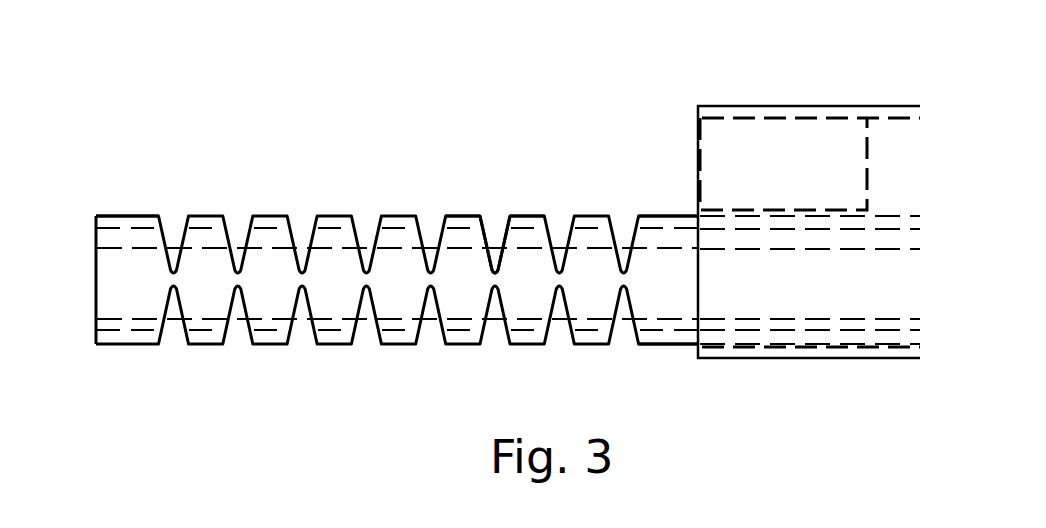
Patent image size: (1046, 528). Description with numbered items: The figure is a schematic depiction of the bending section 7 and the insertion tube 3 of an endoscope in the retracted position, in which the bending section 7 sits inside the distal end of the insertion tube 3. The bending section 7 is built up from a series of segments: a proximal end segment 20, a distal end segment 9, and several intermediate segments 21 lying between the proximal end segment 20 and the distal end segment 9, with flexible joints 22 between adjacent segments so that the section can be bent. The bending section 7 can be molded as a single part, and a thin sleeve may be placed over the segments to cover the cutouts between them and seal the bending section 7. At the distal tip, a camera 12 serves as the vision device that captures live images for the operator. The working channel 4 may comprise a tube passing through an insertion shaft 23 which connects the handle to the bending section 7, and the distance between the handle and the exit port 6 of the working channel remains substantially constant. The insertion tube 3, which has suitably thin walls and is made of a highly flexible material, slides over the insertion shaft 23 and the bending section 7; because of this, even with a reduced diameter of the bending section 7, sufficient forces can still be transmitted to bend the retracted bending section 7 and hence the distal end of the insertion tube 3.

The insertion tube 3 is at (762, 105).
The working channel 4 is at (212, 246).
The exit port 6 is at (94, 272).
The bending section 7 is at (407, 200).
The distal end segment 9 is at (121, 214).
The camera 12 is at (825, 133).
The proximal end segment 20 is at (653, 215).
The intermediate segments 21 is at (463, 215).
The flexible joints 22 is at (496, 268).
The insertion shaft 23 is at (779, 348).